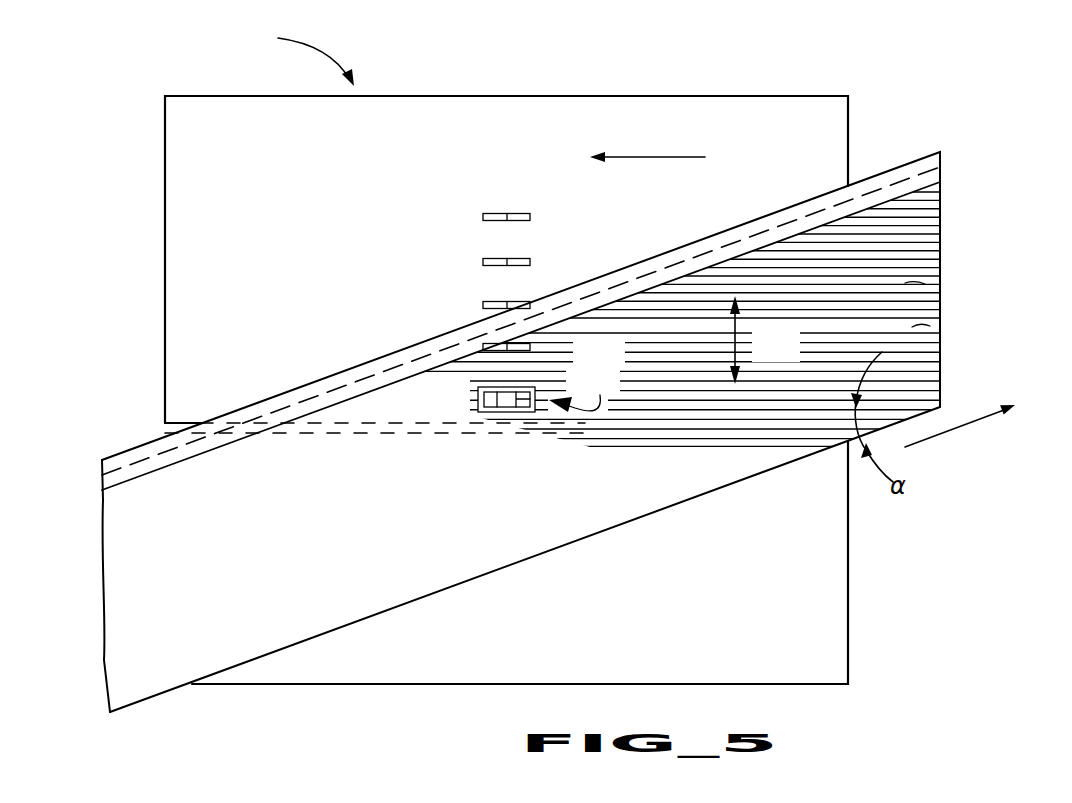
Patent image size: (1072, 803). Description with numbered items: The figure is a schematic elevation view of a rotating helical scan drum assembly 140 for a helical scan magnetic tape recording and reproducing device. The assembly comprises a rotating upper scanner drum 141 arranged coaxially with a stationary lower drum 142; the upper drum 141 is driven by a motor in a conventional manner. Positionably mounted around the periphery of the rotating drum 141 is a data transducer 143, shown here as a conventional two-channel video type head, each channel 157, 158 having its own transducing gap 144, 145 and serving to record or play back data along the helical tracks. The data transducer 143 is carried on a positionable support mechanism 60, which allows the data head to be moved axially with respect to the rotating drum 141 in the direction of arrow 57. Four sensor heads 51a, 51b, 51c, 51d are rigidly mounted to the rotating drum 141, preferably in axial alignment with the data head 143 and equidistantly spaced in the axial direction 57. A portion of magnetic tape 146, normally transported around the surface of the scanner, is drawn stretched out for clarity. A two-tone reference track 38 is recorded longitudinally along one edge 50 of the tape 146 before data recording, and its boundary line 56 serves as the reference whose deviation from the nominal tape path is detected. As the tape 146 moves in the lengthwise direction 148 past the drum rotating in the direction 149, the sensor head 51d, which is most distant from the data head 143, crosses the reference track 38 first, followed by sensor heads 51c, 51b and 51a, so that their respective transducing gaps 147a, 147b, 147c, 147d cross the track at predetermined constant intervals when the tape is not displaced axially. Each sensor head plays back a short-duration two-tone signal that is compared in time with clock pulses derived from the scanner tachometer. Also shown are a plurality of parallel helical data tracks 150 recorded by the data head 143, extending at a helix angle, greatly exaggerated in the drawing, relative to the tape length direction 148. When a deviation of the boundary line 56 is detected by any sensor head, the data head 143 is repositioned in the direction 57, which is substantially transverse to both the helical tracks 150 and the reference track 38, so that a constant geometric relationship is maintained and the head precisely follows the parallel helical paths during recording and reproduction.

The rotating helical scan drum assembly 140 is at (288, 57).
The rotating upper scanner drum 141 is at (172, 139).
The stationary lower drum 142 is at (846, 575).
The data transducer 143 is at (583, 391).
The transducing gap 144 is at (486, 392).
The transducing gap 145 is at (527, 405).
The magnetic tape 146 is at (940, 212).
The transducing gap 147a is at (508, 344).
The transducing gap 147b is at (508, 302).
The transducing gap 147c is at (508, 259).
The transducing gap 147d is at (507, 214).
The lengthwise direction 148 is at (955, 436).
The direction of drum rotation 149 is at (641, 158).
The helical data tracks 150 is at (912, 327).
The data head channel 157 is at (490, 406).
The data head channel 158 is at (511, 408).
The reference track 38 is at (880, 194).
The tape edge 50 is at (257, 406).
The sensor head 51a is at (532, 348).
The sensor head 51b is at (483, 305).
The sensor head 51c is at (483, 262).
The sensor head 51d is at (483, 217).
The boundary line 56 is at (957, 166).
The axial direction 57 is at (742, 347).
The positionable support mechanism 60 is at (480, 400).